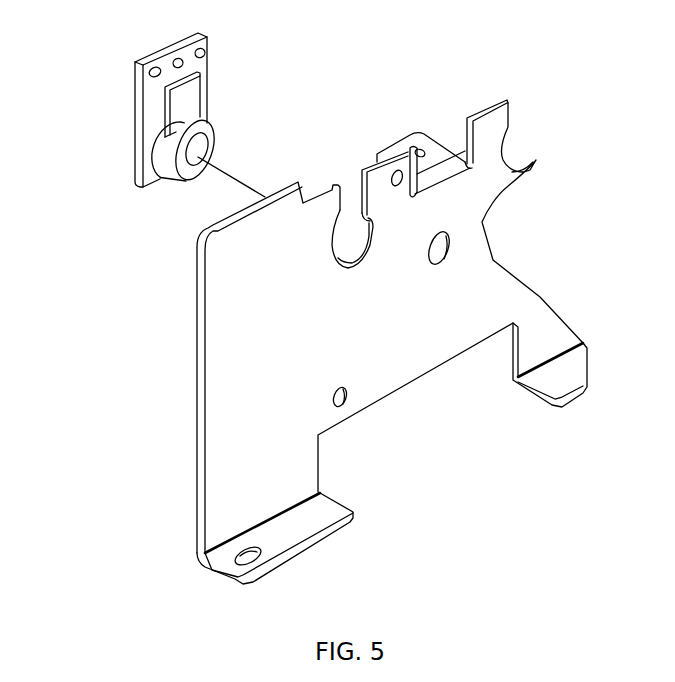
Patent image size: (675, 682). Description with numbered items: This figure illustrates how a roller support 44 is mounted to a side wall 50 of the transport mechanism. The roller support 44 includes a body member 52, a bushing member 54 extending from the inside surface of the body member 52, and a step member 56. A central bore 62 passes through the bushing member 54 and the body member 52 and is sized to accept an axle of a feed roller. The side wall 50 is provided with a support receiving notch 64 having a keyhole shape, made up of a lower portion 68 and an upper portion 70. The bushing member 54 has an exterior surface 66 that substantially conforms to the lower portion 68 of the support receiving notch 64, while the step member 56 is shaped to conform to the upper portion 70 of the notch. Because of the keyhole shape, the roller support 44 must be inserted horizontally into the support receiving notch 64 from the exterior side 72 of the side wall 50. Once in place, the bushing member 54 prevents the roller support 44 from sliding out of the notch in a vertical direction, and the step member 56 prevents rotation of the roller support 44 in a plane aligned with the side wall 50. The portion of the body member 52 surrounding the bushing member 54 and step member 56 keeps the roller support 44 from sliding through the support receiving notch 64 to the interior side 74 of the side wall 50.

The roller support 44 is at (129, 36).
The side wall 50 is at (515, 295).
The body member 52 is at (208, 68).
The bushing member 54 is at (207, 137).
The step member 56 is at (168, 106).
The central bore 62 is at (198, 160).
The support receiving notch 64 is at (352, 163).
The exterior surface 66 is at (160, 158).
The lower portion 68 is at (382, 240).
The upper portion 70 is at (343, 212).
The exterior side 72 is at (478, 112).
The interior side 74 is at (227, 480).